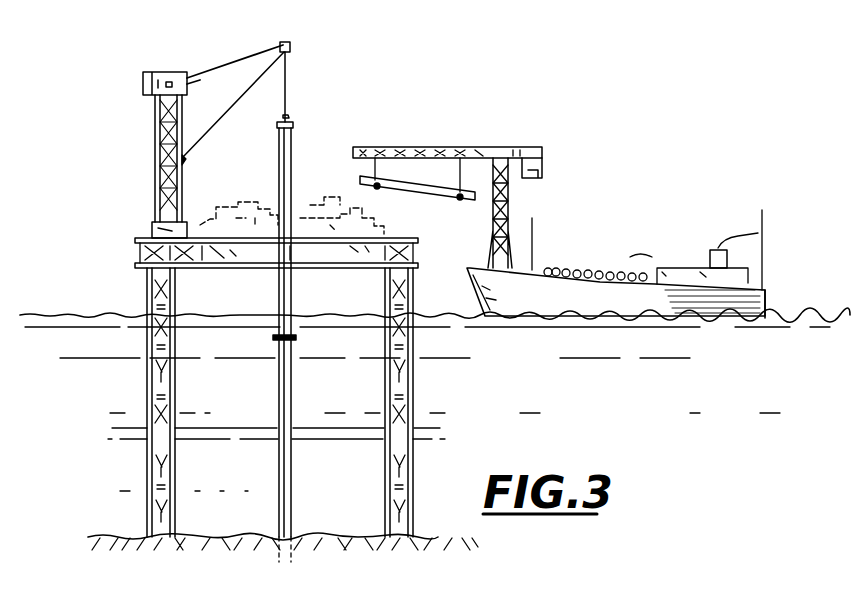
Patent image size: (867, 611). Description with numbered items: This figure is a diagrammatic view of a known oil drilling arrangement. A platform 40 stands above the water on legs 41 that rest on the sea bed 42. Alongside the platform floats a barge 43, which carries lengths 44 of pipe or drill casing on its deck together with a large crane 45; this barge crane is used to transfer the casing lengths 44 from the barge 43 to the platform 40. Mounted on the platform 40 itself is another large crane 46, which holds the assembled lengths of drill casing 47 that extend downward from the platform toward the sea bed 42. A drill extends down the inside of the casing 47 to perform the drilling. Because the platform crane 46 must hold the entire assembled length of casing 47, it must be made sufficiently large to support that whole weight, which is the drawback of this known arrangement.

The platform 40 is at (125, 269).
The legs 41 is at (147, 381).
The sea bed 42 is at (117, 537).
The barge 43 is at (730, 312).
The lengths of pipe or drill casing 44 is at (616, 251).
The large crane 45 is at (524, 148).
The large crane 46 is at (155, 178).
The assembled drill casing 47 is at (283, 381).